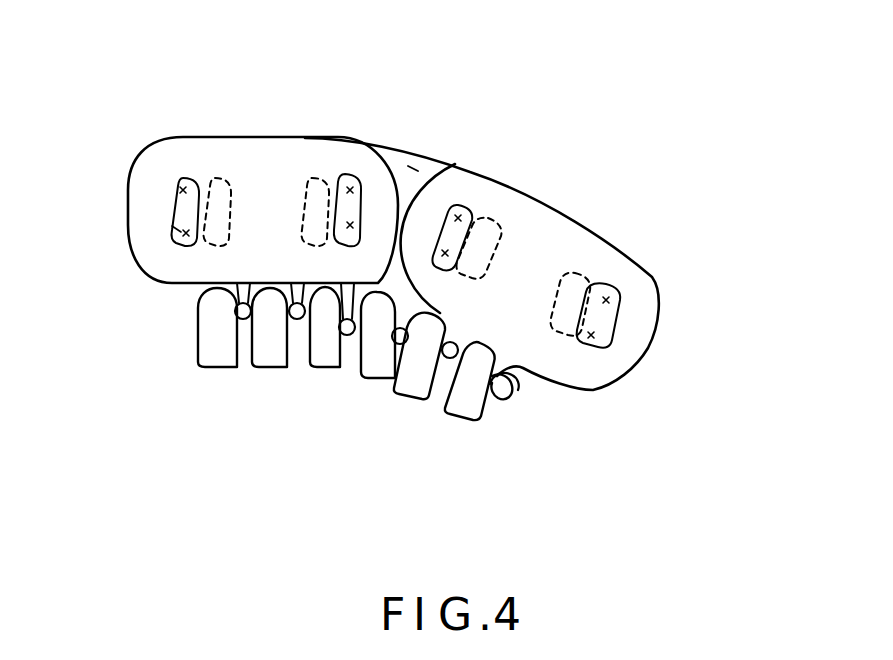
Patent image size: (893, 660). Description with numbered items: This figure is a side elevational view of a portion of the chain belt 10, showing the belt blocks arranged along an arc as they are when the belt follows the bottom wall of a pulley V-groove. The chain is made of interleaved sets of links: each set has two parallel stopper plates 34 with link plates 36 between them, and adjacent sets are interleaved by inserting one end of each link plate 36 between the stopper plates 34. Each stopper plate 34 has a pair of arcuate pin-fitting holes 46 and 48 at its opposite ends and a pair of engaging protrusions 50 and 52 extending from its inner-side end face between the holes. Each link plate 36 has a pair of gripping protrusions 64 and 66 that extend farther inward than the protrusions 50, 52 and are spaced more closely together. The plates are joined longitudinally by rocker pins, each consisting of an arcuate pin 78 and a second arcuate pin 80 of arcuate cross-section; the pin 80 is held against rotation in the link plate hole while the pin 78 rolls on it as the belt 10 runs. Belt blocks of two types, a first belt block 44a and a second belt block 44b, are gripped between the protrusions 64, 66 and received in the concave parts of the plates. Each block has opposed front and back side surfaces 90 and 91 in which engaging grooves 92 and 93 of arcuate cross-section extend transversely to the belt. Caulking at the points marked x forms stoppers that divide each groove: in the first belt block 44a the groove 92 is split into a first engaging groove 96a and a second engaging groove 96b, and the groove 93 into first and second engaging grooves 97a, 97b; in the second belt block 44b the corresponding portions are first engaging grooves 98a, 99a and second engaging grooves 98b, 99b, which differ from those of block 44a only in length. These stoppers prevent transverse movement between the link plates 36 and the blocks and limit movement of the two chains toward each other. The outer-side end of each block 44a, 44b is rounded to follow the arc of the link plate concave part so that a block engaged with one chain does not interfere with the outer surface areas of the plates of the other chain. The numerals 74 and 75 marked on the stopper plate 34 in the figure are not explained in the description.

The chain belt 10 is at (693, 157).
The stopper plate 34 is at (148, 180).
The link plate 36 is at (413, 168).
The first belt block 44a is at (480, 480).
The second belt block 44b is at (215, 360).
The pin-fitting hole 46 is at (178, 230).
The pin-fitting hole 48 is at (386, 250).
The engaging protrusion 50 is at (210, 285).
The engaging protrusion 52 is at (528, 396).
The gripping protrusion 64 is at (258, 368).
The gripping protrusion 66 is at (287, 338).
The edge 74 is at (175, 283).
The edge 75 is at (575, 390).
The arcuate pin 78 is at (174, 183).
The second arcuate pin 80 is at (221, 178).
The front side surface 90 is at (246, 366).
The back side surface 91 is at (198, 342).
The engaging groove 92 is at (480, 296).
The engaging groove 93 is at (441, 294).
The first engaging groove 96a is at (500, 392).
The second engaging groove 96b is at (297, 303).
The first engaging groove 97a is at (448, 356).
The second engaging groove 97b is at (318, 372).
The first engaging groove 98a is at (408, 318).
The second engaging groove 98b is at (458, 325).
The first engaging groove 99a is at (395, 318).
The second engaging groove 99b is at (428, 342).